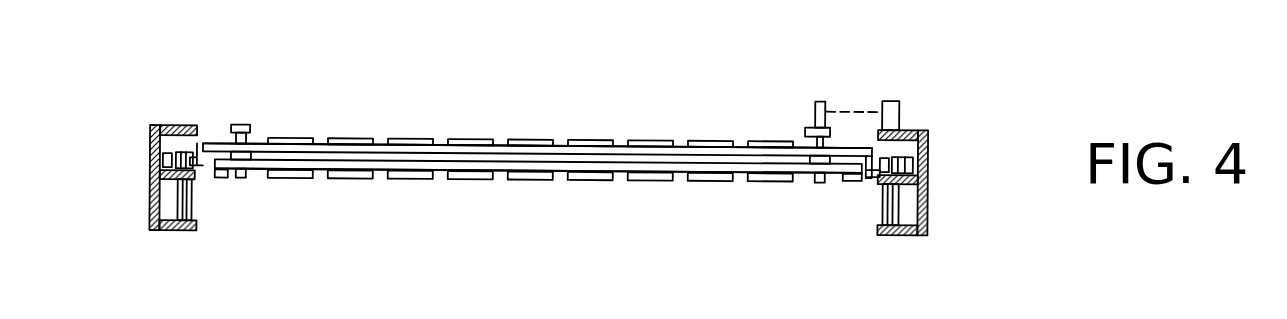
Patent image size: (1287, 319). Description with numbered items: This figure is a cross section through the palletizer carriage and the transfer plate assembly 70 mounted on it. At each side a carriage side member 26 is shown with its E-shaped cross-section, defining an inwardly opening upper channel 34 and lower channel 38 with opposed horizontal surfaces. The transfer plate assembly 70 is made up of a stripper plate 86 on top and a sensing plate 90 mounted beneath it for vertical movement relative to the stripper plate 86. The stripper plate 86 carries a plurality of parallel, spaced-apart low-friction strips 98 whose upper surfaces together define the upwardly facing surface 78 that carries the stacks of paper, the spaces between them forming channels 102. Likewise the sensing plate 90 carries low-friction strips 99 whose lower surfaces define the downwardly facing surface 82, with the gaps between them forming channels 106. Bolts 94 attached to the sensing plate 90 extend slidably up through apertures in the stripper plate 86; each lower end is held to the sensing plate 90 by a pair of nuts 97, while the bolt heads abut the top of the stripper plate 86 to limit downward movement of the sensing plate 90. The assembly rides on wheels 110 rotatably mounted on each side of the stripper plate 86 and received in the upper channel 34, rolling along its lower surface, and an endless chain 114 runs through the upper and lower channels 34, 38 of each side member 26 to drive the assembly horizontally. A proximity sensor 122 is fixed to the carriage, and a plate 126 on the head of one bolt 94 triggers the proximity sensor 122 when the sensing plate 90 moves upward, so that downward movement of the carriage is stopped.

The transfer plate assembly 70 is at (599, 139).
The upwardly facing surface 78 is at (581, 139).
The downwardly facing surface 82 is at (589, 180).
The stripper plate 86 is at (318, 141).
The sensing plate 90 is at (313, 178).
The low-friction strips 98 is at (604, 139).
The channels 102 is at (518, 138).
The low-friction strips 99 is at (513, 178).
The channels 106 is at (747, 175).
The bolts 94 is at (246, 124).
The nuts 97 is at (253, 178).
The side members 26 is at (150, 138).
The upper channel 34 is at (174, 134).
The lower channel 38 is at (177, 225).
The wheels 110 is at (152, 160).
The endless chain 114 is at (191, 203).
The proximity sensor 122 is at (894, 110).
The plate 126 is at (826, 108).